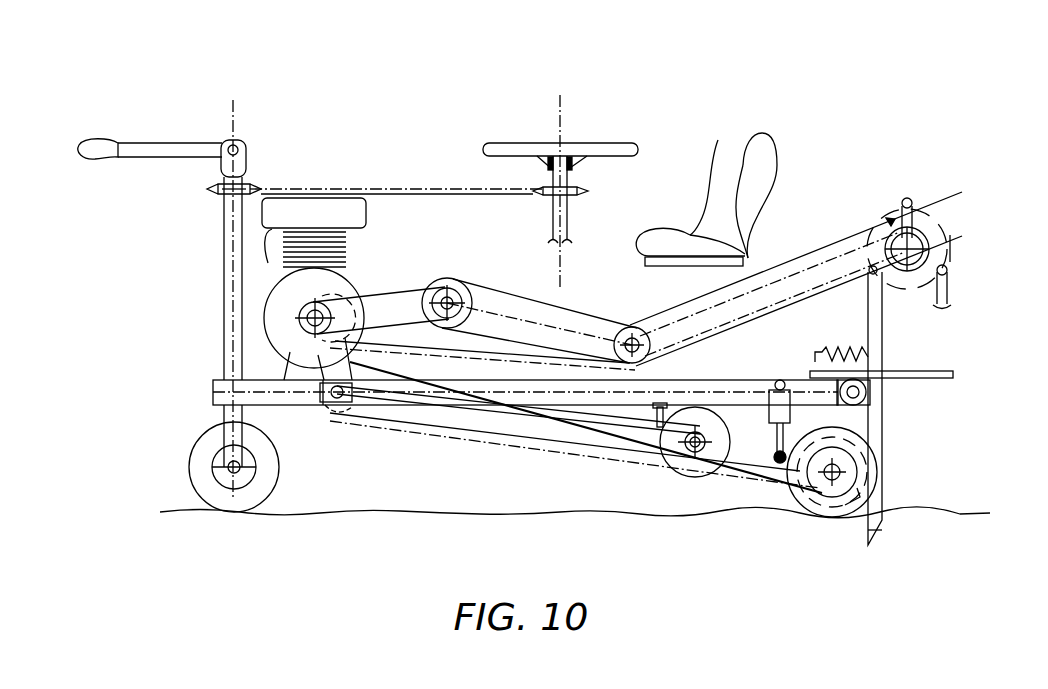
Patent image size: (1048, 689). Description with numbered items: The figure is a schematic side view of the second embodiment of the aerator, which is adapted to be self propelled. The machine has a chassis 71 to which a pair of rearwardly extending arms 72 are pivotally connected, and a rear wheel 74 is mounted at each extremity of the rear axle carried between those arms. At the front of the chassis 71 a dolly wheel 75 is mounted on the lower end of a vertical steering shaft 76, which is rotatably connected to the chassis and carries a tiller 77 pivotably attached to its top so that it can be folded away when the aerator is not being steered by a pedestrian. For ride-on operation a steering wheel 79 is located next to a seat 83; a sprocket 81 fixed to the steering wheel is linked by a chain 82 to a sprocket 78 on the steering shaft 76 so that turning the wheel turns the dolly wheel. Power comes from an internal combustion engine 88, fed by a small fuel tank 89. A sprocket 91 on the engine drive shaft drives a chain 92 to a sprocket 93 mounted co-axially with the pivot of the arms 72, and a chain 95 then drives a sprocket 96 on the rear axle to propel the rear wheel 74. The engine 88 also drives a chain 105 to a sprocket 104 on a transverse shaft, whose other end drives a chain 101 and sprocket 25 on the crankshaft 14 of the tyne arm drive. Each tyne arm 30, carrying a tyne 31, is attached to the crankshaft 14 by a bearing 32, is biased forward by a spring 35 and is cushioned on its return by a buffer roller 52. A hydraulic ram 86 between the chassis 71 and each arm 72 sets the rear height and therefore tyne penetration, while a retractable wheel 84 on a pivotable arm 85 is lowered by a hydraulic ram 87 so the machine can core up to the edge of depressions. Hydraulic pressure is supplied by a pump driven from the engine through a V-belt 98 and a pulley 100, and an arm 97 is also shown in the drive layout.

The crankshaft 14 is at (953, 250).
The sprocket 25 is at (933, 240).
The tyne arm 30 is at (912, 229).
The tyne 31 is at (884, 530).
The bearing 32 is at (909, 203).
The spring 35 is at (870, 348).
The roller 52 is at (870, 397).
The chassis 71 is at (283, 407).
The rearwardly extending arm 72 is at (583, 434).
The rear wheel 74 is at (860, 443).
The dolly wheel 75 is at (227, 502).
The steering shaft 76 is at (226, 312).
The tiller 77 is at (140, 143).
The sprocket 78 is at (245, 183).
The steering wheel 79 is at (588, 143).
The sprocket 81 is at (572, 187).
The chain 82 is at (352, 189).
The seat 83 is at (719, 139).
The retractable wheel 84 is at (710, 417).
The pivotable arm 85 is at (628, 405).
The hydraulic ram 86 is at (800, 418).
The hydraulic ram 87 is at (690, 413).
The internal combustion engine 88 is at (328, 251).
The fuel tank 89 is at (345, 224).
The sprocket 91 is at (310, 315).
The chain 92 is at (356, 342).
The sprocket 93 is at (340, 407).
The chain 95 is at (470, 447).
The sprocket 96 is at (857, 481).
The arm 97 is at (462, 308).
The V-belt 98 is at (398, 292).
The pulley 100 is at (455, 295).
The chain 101 is at (797, 262).
The sprocket 104 is at (645, 340).
The chain 105 is at (548, 318).